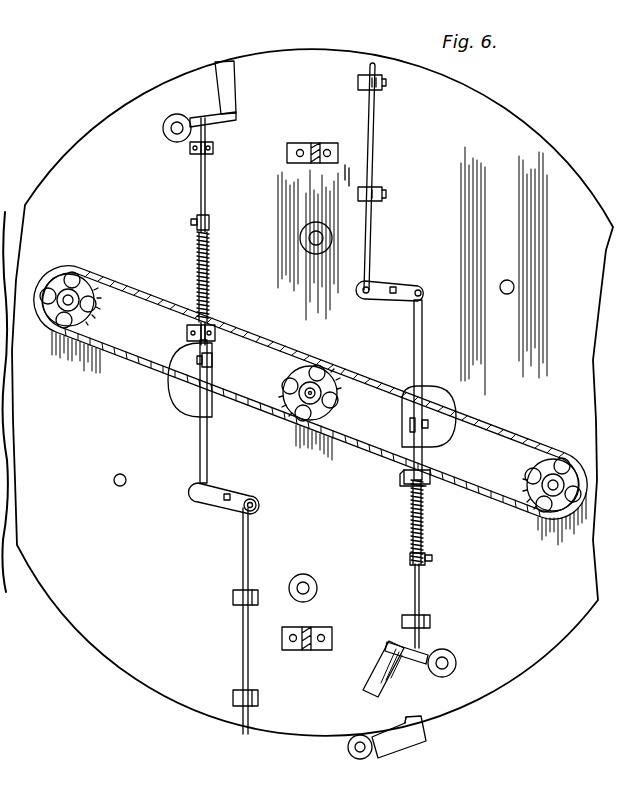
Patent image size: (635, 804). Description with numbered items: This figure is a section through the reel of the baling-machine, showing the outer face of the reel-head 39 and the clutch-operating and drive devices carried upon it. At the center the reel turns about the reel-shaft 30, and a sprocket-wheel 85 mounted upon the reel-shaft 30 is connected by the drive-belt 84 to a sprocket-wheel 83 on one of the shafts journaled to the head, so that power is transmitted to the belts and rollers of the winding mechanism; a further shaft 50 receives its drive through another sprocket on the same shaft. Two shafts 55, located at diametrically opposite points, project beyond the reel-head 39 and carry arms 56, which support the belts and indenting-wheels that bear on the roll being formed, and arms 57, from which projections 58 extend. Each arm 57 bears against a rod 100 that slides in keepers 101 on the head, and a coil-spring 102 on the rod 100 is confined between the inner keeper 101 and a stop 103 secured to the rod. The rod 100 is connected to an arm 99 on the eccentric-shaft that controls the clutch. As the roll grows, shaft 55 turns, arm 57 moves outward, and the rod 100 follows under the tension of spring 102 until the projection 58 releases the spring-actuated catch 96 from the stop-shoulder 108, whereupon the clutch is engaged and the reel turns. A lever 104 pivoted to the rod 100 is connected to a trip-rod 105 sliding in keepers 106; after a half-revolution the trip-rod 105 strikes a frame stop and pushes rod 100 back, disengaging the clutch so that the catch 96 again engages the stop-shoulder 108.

The reel-shaft 30 is at (303, 420).
The reel-head 39 is at (540, 151).
The shaft 50 is at (118, 486).
The shaft 55 is at (182, 124).
The arm 56 is at (229, 96).
The arm 57 is at (223, 122).
The projection 58 is at (365, 677).
The sprocket-wheel 83 is at (100, 325).
The drive-belt 84 is at (132, 366).
The sprocket-wheel 85 is at (340, 377).
The spring-actuated catch 96 is at (395, 752).
The arm 99 is at (214, 356).
The rod 100 is at (206, 194).
The keeper 101 is at (215, 148).
The coil-spring 102 is at (215, 292).
The stop 103 is at (212, 223).
The lever 104 is at (400, 288).
The trip-rod 105 is at (382, 150).
The keeper 106 is at (385, 84).
The stop-shoulder 108 is at (400, 726).